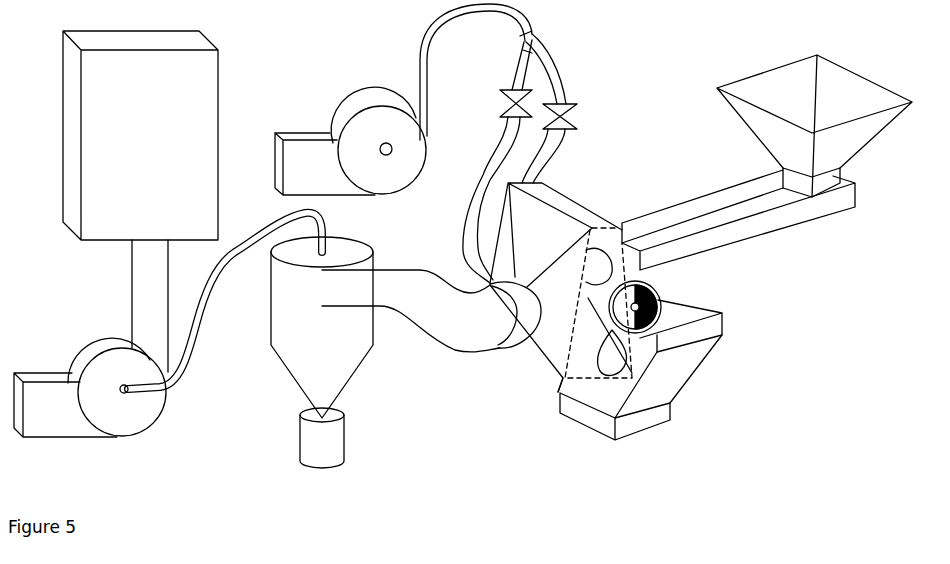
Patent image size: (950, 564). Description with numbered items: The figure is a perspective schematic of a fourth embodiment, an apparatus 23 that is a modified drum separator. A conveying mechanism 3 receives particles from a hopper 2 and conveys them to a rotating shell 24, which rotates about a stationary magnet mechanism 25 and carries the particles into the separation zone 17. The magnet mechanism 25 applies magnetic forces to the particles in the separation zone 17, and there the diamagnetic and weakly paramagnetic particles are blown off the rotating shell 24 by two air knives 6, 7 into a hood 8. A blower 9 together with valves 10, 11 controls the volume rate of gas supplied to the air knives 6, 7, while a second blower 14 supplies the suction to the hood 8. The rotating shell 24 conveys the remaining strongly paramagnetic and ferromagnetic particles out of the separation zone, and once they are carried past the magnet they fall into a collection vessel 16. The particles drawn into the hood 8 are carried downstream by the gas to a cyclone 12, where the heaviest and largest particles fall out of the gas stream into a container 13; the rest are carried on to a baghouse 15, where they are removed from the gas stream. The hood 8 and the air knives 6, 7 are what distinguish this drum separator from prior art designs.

The hopper 2 is at (814, 126).
The conveying mechanism 3 is at (738, 220).
The air knife 6 is at (599, 266).
The air knife 7 is at (612, 352).
The hood 8 is at (439, 311).
The blower 9 is at (350, 141).
The valve 10 is at (560, 108).
The valve 11 is at (497, 161).
The cyclone 12 is at (322, 327).
The container 13 is at (322, 438).
The blower 14 is at (90, 387).
The baghouse 15 is at (140, 201).
The collection vessel 16 is at (640, 370).
The separation zone 17 is at (588, 298).
The apparatus 23 is at (436, 72).
The rotating shell 24 is at (657, 295).
The stationary magnet mechanism 25 is at (623, 318).